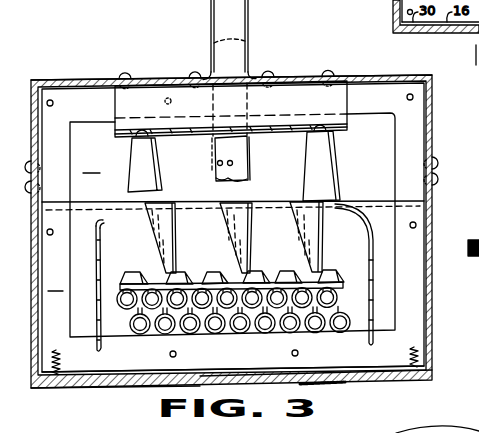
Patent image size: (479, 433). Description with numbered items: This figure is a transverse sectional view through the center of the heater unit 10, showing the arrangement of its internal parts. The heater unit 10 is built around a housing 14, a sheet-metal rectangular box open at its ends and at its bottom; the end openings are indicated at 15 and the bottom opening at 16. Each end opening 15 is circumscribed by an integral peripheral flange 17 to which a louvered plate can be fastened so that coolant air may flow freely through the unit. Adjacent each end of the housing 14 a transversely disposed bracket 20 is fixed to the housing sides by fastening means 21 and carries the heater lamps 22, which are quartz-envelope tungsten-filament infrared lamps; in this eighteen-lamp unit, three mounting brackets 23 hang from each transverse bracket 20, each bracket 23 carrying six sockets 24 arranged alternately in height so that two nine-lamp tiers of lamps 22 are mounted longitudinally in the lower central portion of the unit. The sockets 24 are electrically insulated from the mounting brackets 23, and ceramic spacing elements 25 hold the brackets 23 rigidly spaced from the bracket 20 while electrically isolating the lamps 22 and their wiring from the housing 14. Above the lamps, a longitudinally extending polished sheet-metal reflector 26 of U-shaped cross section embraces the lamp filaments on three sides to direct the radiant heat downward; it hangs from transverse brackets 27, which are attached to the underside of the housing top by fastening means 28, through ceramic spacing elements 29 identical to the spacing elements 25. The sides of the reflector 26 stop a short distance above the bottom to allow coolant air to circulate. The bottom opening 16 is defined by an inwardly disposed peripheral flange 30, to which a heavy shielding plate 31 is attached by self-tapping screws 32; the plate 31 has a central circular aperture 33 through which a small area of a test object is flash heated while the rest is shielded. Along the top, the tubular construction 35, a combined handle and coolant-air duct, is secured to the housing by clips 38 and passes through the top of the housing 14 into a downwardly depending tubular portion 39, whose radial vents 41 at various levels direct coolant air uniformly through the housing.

The heater unit 10 is at (440, 102).
The housing 14 is at (72, 80).
The end opening 15 is at (91, 165).
The bottom opening 16 is at (242, 366).
The peripheral flange 17 is at (56, 283).
The transverse bracket 20 is at (350, 201).
The fastening means 21 is at (438, 164).
The heater lamps 22 is at (133, 327).
The mounting bracket 23 is at (135, 270).
The sockets 24 is at (128, 285).
The spacing elements 25 is at (233, 235).
The reflector 26 is at (101, 226).
The transverse brackets 27 is at (350, 99).
The fastening means 28 is at (128, 78).
The ceramic spacing elements 29 is at (145, 150).
The peripheral flange 30 is at (408, 366).
The shielding plate 31 is at (95, 388).
The self-tapping screws 32 is at (60, 353).
The central aperture 33 is at (330, 382).
The tubular construction 35 is at (204, 18).
The clips 38 is at (250, 70).
The tubular portion 39 is at (249, 148).
The vents 41 is at (228, 165).